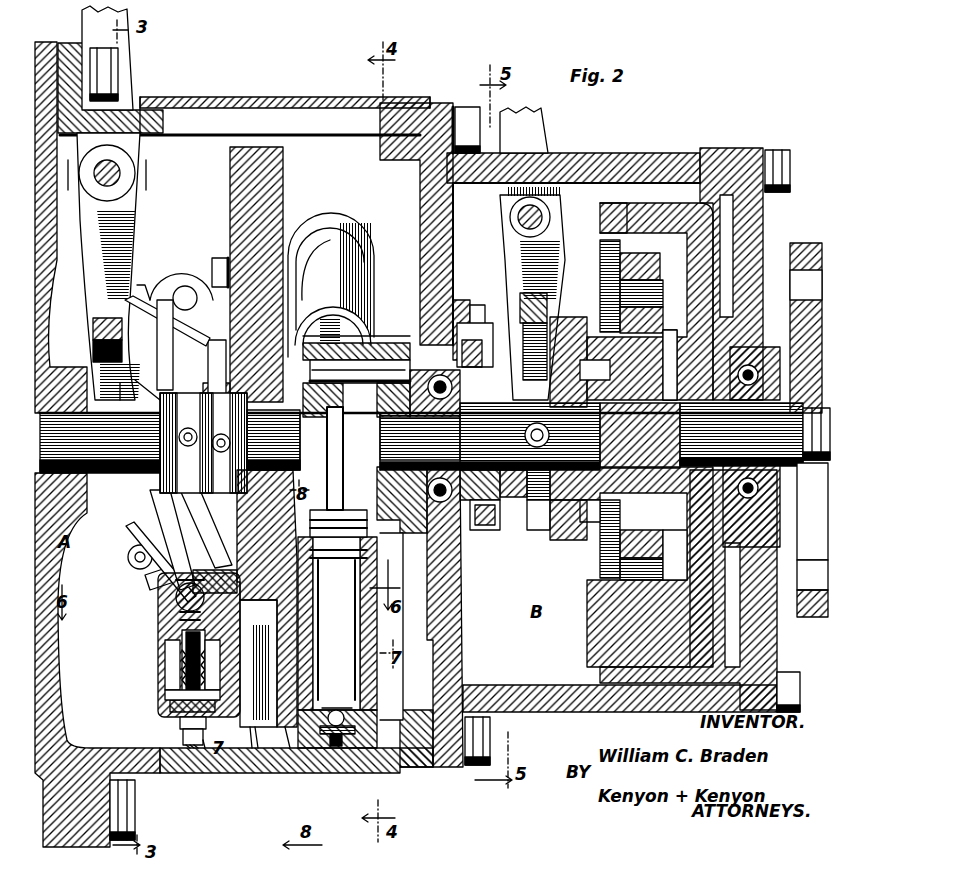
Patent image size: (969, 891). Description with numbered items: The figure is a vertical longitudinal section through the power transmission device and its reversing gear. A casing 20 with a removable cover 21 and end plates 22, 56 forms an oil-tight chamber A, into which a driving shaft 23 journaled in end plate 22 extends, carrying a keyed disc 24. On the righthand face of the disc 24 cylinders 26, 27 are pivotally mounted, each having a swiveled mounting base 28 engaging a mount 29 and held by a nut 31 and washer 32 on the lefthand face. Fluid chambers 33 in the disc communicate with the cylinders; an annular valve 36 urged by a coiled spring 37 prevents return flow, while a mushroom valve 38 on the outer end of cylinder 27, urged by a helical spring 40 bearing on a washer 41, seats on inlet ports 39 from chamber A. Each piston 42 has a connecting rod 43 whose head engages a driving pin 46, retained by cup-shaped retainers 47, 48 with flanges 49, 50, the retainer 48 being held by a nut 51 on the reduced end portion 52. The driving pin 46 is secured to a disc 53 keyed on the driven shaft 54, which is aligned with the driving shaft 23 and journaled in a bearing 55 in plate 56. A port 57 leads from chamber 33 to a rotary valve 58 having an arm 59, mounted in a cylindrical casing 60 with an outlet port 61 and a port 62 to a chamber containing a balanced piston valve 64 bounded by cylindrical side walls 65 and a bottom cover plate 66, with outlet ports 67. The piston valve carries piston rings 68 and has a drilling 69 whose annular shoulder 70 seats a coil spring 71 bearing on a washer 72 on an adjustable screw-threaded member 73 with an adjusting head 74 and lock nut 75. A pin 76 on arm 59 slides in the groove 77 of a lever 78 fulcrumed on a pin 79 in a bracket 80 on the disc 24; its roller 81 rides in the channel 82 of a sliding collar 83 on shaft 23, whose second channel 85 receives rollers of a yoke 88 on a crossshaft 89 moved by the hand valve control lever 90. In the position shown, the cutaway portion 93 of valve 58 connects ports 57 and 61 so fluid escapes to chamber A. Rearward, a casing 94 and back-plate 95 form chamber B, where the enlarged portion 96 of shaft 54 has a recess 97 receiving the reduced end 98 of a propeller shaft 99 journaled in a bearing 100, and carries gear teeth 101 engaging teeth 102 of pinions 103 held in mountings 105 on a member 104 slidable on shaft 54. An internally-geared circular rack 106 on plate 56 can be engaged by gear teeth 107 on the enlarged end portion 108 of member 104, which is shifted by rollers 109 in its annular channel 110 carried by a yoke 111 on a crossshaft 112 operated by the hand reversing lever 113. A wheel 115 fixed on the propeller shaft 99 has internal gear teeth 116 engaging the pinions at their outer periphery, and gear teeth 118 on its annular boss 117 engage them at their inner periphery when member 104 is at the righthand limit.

The casing 20 is at (290, 760).
The removable cover 21 is at (248, 99).
The end plate 22 is at (44, 358).
The driving shaft 23 is at (108, 475).
The disc 24 is at (284, 167).
The cylinder 26 is at (345, 238).
The cylinder 27 is at (378, 632).
The swiveled mounting base 28 is at (318, 245).
The mount 29 is at (299, 240).
The nut 31 is at (220, 272).
The washer 32 is at (226, 262).
The fluid chamber 33 is at (258, 750).
The annular valve 36 is at (264, 671).
The coiled spring 37 is at (252, 750).
The mushroom valve 38 is at (335, 752).
The inlet ports 39 is at (393, 752).
The helical spring 40 is at (360, 752).
The washer 41 is at (352, 752).
The piston 42 is at (350, 510).
The connecting rod 43 is at (340, 458).
The driving pin 46 is at (340, 362).
The cup-shaped retainer 47 is at (345, 380).
The cup-shaped retainer 48 is at (350, 320).
The flange 49 is at (333, 345).
The flange 50 is at (298, 446).
The nut 51 is at (320, 318).
The reduced end portion 52 is at (273, 440).
The disc 53 is at (398, 542).
The driven shaft 54 is at (445, 440).
The bearing 55 is at (461, 306).
The end plate 56 is at (464, 662).
The port 57 is at (240, 584).
The rotary valve 58 is at (163, 608).
The arm 59 is at (182, 286).
The cylindrical casing 60 is at (167, 624).
The outlet port 61 is at (160, 580).
The port 62 is at (162, 642).
The balanced piston valve 64 is at (163, 667).
The cylindrical side walls 65 is at (166, 682).
The bottom cover plate 66 is at (183, 727).
The outlet ports 67 is at (162, 714).
The piston rings 68 is at (168, 698).
The drilling 69 is at (178, 722).
The annular shoulder 70 is at (167, 652).
The coil spring 71 is at (192, 730).
The washer 72 is at (185, 750).
The adjustable screw-threaded member 73 is at (191, 750).
The adjusting head 74 is at (196, 750).
The lock nut 75 is at (206, 750).
The pin 76 is at (137, 300).
The groove 77 is at (125, 318).
The lever 78 is at (105, 342).
The pin 79 is at (110, 360).
The bracket 80 is at (212, 517).
The roller 81 is at (150, 400).
The channel 82 is at (200, 420).
The collar 83 is at (158, 442).
The second channel 85 is at (190, 448).
The yoke 88 is at (95, 245).
The crossshaft 89 is at (122, 170).
The hand valve control lever 90 is at (88, 25).
The cutaway portion 93 is at (176, 597).
The casing 94 is at (565, 158).
The back-plate 95 is at (758, 237).
The enlarged portion 96 is at (541, 532).
The recess 97 is at (541, 508).
The reduced end 98 is at (568, 532).
The propeller shaft 99 is at (715, 435).
The bearing 100 is at (750, 347).
The gear teeth 101 is at (577, 468).
The teeth 102 is at (638, 258).
The pinions 103 is at (603, 258).
The member 104 is at (548, 340).
The mountings 105 is at (603, 294).
The internally-geared circular rack 106 is at (505, 538).
The gear teeth 107 is at (495, 502).
The enlarged end portion 108 is at (497, 352).
The rollers 109 is at (522, 436).
The annular channel 110 is at (532, 498).
The yoke 111 is at (514, 254).
The crossshaft 112 is at (509, 216).
The hand reversing lever 113 is at (538, 130).
The wheel 115 is at (672, 205).
The internal gear teeth 116 is at (605, 229).
The annular boss 117 is at (680, 551).
The gear teeth 118 is at (670, 360).